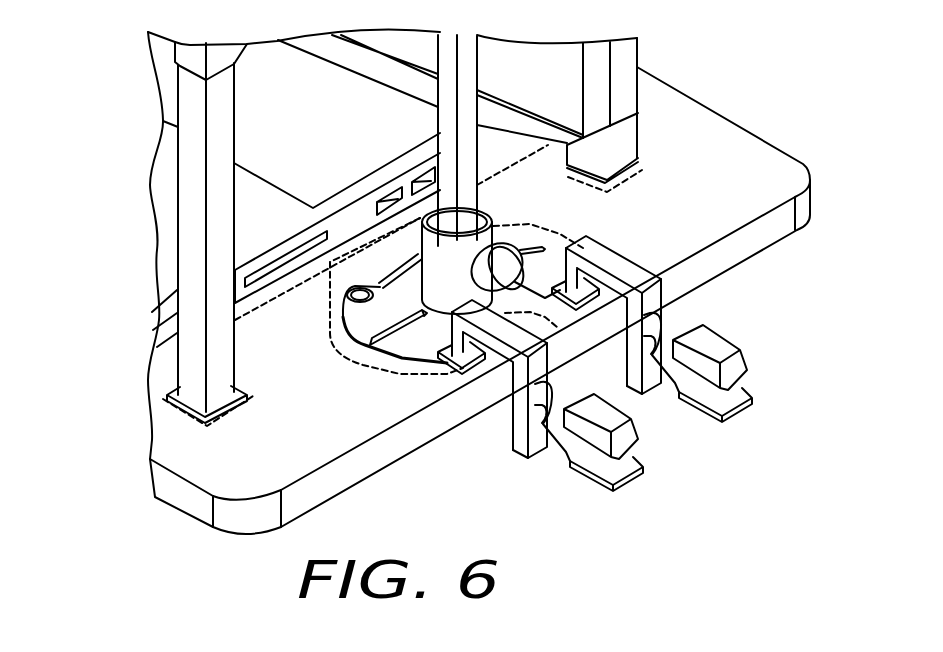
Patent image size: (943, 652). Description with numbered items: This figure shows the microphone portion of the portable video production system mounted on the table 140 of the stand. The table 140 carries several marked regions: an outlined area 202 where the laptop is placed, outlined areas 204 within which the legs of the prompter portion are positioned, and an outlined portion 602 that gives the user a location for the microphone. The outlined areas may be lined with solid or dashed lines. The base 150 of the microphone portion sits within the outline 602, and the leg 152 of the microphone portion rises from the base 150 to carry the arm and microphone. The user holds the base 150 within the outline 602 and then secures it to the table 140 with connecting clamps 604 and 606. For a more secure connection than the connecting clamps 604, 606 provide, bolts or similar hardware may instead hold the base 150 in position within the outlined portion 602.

The table 140 is at (260, 458).
The base 150 is at (362, 327).
The leg 152 is at (468, 72).
The outlined area 202 is at (513, 165).
The outlined areas 204 is at (648, 163).
The outlined portion 602 is at (397, 373).
The connecting clamp 604 is at (632, 440).
The connecting clamp 606 is at (745, 376).